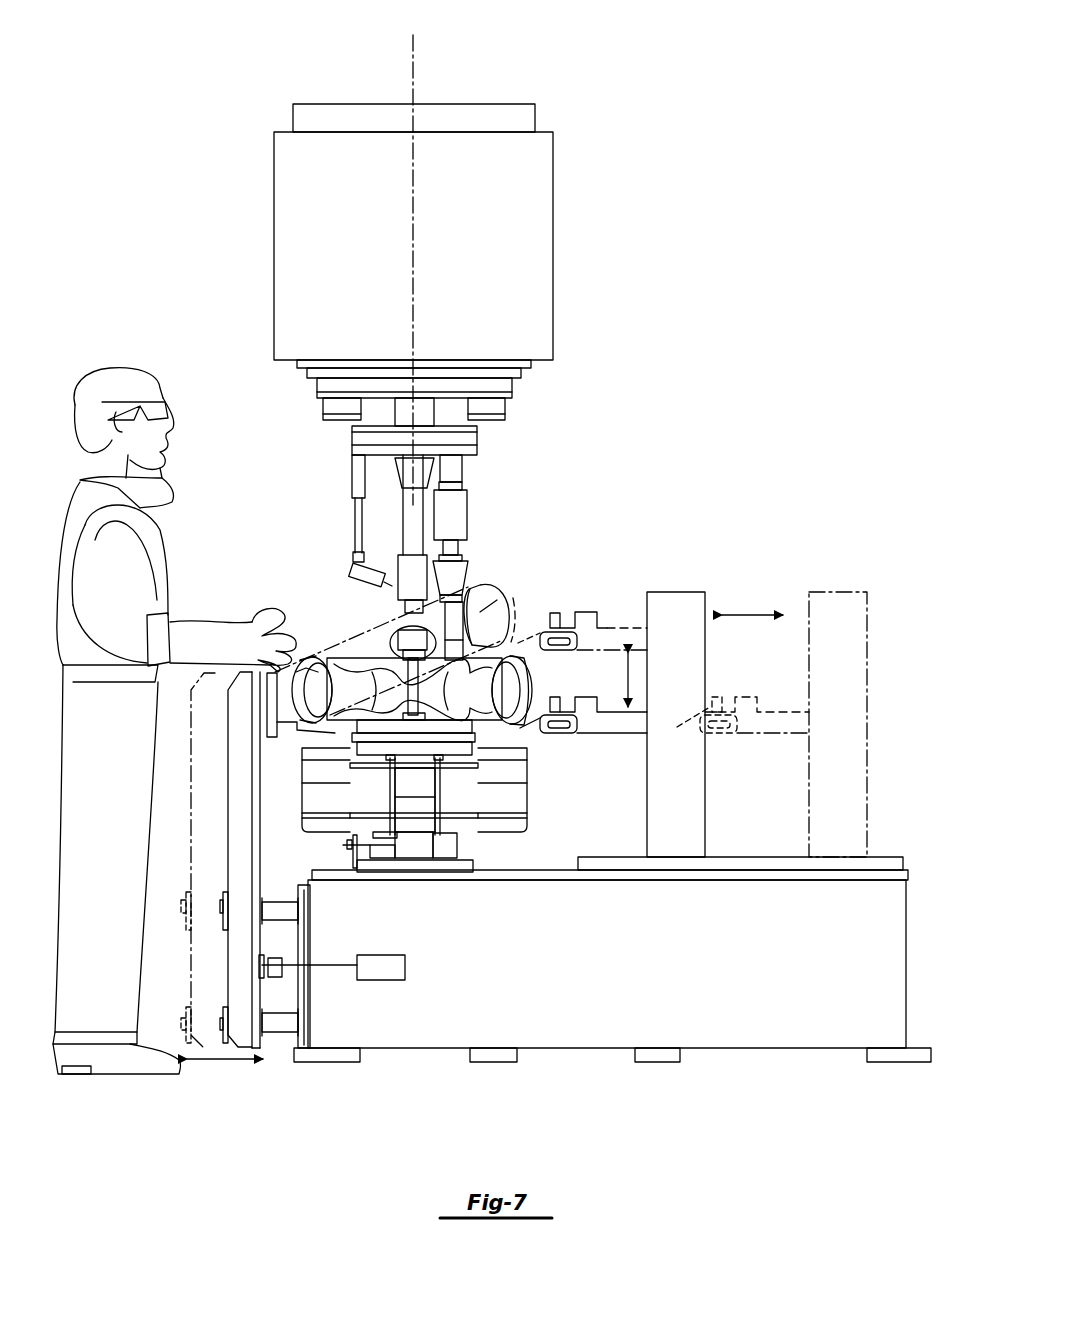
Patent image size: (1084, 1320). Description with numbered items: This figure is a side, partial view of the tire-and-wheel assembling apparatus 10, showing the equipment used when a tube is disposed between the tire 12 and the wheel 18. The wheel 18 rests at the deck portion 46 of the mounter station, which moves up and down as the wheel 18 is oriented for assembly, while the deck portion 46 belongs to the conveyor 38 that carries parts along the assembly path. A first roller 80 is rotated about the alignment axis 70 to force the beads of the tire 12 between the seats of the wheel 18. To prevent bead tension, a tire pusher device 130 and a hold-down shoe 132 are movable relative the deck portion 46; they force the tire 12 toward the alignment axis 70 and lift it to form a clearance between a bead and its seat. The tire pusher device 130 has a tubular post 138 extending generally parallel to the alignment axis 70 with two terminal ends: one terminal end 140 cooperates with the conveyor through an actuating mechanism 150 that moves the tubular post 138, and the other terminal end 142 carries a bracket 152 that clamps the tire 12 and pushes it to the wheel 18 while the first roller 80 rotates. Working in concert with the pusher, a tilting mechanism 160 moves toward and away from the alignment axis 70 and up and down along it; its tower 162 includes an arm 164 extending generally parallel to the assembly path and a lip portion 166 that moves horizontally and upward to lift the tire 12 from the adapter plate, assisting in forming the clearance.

The apparatus 10 is at (690, 388).
The tire 12 is at (504, 590).
The wheel 18 is at (451, 703).
The loading station 38 is at (447, 844).
The deck portion 46 is at (493, 777).
The alignment axis 70 is at (414, 50).
The first roller 80 is at (450, 515).
The tire pusher device 130 is at (241, 1022).
The hold-down shoe 132 is at (336, 484).
The tubular post 138 is at (242, 855).
The terminal end 140 is at (210, 1050).
The terminal end 142 is at (243, 690).
The actuating mechanism 150 is at (405, 968).
The bracket 152 is at (318, 655).
The tilting mechanism 160 is at (587, 728).
The tower 162 is at (685, 612).
The arm 164 is at (625, 638).
The lip portion 166 is at (566, 578).